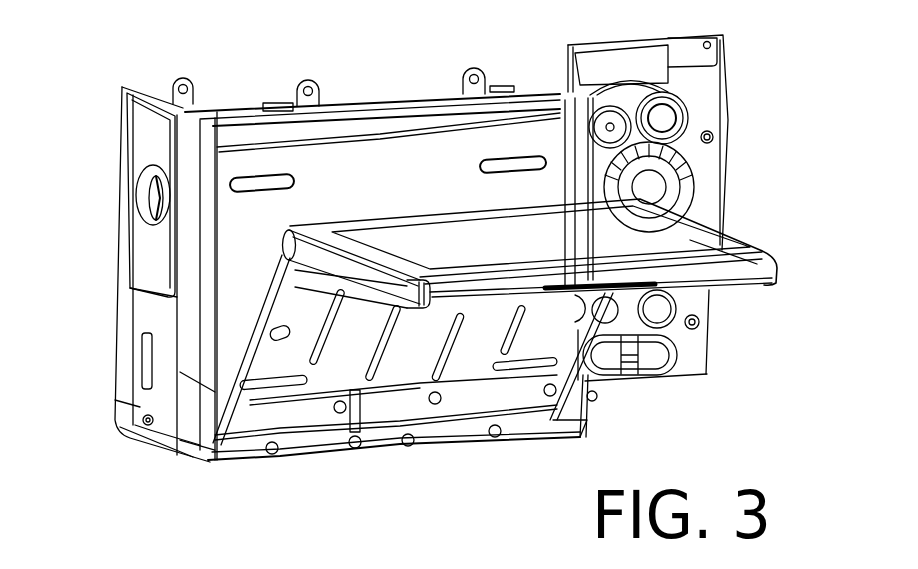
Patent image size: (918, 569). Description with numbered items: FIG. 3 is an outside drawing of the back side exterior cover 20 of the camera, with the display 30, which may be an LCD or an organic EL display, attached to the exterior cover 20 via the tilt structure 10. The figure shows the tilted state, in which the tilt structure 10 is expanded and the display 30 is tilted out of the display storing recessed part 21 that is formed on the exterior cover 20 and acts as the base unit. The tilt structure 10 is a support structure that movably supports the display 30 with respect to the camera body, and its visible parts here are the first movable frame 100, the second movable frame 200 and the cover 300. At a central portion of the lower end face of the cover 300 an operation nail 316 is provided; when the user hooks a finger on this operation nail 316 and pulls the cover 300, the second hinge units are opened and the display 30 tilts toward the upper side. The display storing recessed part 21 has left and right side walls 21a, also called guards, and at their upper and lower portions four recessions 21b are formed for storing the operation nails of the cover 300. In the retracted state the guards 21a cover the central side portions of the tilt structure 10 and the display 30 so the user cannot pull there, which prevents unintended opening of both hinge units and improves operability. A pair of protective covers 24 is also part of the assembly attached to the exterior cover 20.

The tilt structure 10 is at (400, 513).
The exterior cover 20 is at (737, 77).
The display storing recessed part 21 is at (346, 132).
The side walls 21a is at (207, 310).
The recessions 21b is at (200, 178).
The protective covers 24 is at (467, 405).
The display 30 is at (468, 243).
The first movable frame 100 is at (265, 368).
The second movable frame 200 is at (340, 368).
The cover 300 is at (445, 318).
The operation nail 316 is at (705, 246).